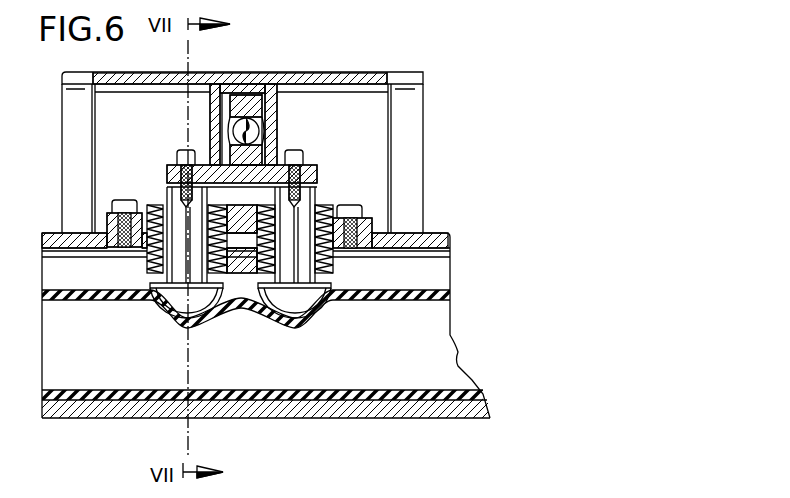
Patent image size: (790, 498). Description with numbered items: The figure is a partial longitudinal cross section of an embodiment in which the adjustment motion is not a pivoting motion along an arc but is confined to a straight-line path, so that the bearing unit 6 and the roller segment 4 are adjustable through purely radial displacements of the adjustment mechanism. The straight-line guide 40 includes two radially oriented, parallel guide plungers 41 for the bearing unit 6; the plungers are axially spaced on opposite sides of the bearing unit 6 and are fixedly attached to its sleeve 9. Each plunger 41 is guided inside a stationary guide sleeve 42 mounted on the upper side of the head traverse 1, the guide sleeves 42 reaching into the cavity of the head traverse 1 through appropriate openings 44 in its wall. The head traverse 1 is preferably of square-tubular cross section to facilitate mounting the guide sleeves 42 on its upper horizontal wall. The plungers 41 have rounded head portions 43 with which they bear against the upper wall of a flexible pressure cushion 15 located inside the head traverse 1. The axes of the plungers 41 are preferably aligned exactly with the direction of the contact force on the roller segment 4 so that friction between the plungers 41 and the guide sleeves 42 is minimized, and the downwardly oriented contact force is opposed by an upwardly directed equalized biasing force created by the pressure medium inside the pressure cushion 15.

The head traverse 1 is at (452, 242).
The roller segment 4 is at (369, 80).
The bearing unit 6 is at (320, 132).
The sleeve 9 is at (318, 168).
The pressure cushion 15 is at (372, 300).
The straight-line guide 40 is at (362, 183).
The guide plunger 41 is at (178, 272).
The guide sleeve 42 is at (147, 253).
The rounded head portion 43 is at (262, 261).
The opening 44 is at (157, 204).